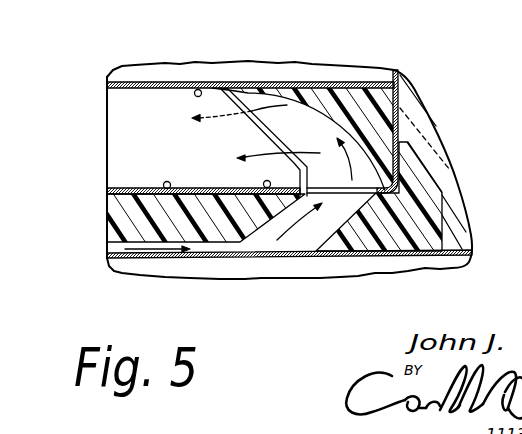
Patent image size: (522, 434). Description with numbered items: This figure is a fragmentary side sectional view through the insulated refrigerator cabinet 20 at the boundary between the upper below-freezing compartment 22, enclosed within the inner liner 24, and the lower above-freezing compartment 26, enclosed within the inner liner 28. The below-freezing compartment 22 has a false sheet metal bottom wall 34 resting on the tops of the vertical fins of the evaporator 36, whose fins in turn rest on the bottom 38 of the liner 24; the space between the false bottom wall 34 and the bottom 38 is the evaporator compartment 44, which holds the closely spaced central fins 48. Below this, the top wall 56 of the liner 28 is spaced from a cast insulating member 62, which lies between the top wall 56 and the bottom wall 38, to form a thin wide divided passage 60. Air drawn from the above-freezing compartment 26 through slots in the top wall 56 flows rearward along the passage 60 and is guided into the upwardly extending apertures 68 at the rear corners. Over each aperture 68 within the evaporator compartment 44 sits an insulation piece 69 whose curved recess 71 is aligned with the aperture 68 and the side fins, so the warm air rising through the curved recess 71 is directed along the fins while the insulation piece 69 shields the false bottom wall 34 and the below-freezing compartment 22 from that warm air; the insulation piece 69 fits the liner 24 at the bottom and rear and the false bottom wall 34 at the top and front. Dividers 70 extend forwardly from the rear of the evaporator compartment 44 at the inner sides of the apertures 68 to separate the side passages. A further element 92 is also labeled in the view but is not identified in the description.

The insulated refrigerator cabinet 20 is at (446, 137).
The upper below-freezing compartment 22 is at (261, 62).
The inner liner 24 is at (394, 70).
The lower above-freezing compartment 26 is at (425, 266).
The inner liner 28 is at (456, 246).
The false sheet metal bottom wall 34 is at (107, 77).
The evaporator 36 is at (120, 134).
The bottom 38 is at (107, 185).
The evaporator compartment 44 is at (240, 143).
The closely spaced central fins 48 is at (120, 169).
The top wall 56 is at (160, 262).
The thin wide divided passage 60 is at (107, 252).
The cast insulating member 62 is at (107, 222).
The upwardly extending apertures 68 is at (318, 224).
The insulation pieces 69 is at (357, 90).
The dividers 70 is at (212, 88).
The curved recesses 71 is at (324, 150).
The shell wall portion 92 is at (448, 172).